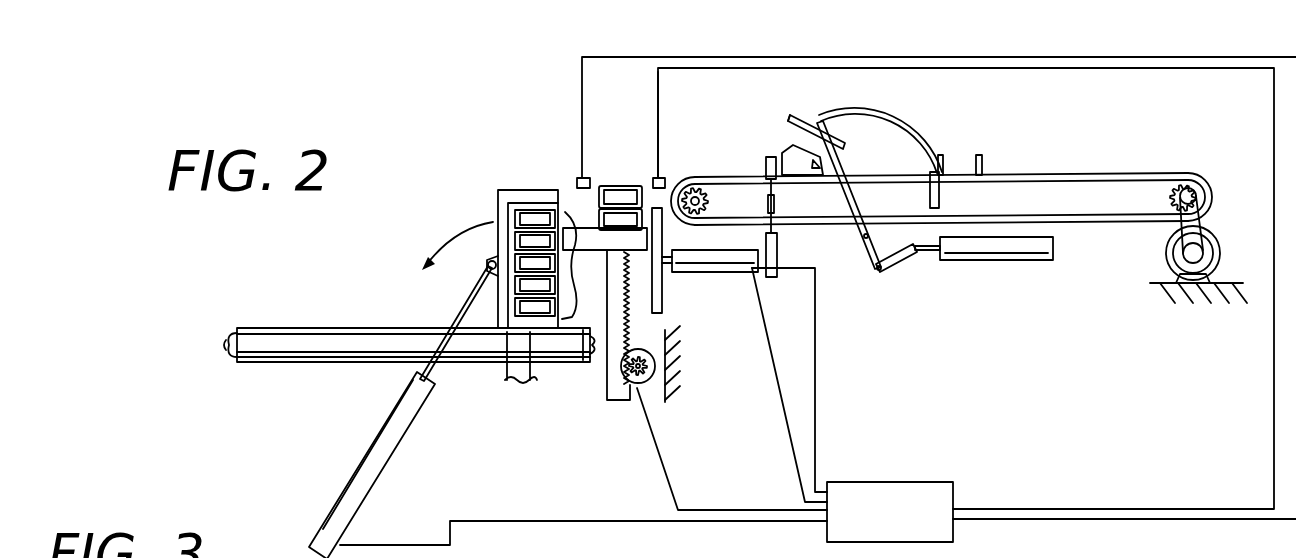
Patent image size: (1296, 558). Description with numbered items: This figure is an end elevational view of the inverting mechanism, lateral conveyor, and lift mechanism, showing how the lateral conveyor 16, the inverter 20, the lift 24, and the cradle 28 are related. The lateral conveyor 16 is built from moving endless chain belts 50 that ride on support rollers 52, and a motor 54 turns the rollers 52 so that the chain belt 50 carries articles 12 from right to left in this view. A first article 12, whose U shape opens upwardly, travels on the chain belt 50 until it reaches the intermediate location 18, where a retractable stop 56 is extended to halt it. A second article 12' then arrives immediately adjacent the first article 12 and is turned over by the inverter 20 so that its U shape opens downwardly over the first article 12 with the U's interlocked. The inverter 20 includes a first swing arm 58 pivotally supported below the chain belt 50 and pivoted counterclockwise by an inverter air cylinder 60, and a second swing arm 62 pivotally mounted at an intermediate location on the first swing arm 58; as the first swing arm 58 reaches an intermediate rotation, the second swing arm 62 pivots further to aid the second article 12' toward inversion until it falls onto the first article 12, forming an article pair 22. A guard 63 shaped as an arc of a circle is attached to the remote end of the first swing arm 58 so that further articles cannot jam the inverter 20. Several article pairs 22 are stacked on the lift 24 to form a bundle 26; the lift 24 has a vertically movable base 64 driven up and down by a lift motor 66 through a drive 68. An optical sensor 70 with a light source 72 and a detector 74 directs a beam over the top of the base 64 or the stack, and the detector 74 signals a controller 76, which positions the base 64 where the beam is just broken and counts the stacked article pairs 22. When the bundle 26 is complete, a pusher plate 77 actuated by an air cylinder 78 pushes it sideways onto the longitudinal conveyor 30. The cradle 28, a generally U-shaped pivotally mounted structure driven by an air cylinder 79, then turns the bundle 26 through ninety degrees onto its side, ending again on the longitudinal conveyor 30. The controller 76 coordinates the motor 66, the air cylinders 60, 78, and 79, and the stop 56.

The article 12 is at (802, 178).
The second article 12' is at (781, 105).
The lateral conveyor 16 is at (1183, 168).
The intermediate location 18 is at (830, 194).
The inverter 20 is at (862, 100).
The article pair 22 is at (598, 217).
The lift 24 is at (628, 422).
The bundle 26 is at (584, 265).
The cradle 28 is at (506, 190).
The longitudinal conveyor 30 is at (326, 372).
The chain belt 50 is at (1078, 174).
The support roller 52 is at (699, 184).
The motor 54 is at (1220, 243).
The retractable stop 56 is at (766, 165).
The first swing arm 58 is at (867, 206).
The inverter air cylinder 60 is at (974, 261).
The second swing arm 62 is at (808, 118).
The guard 63 is at (906, 128).
The base 64 is at (633, 240).
The lift motor 66 is at (640, 385).
The drive 68 is at (618, 374).
The optical sensor 70 is at (610, 140).
The light source 72 is at (580, 178).
The detector 74 is at (653, 182).
The controller 76 is at (928, 482).
The pusher plate 77 is at (662, 306).
The air cylinder 78 is at (708, 273).
The air cylinder 79 is at (335, 500).